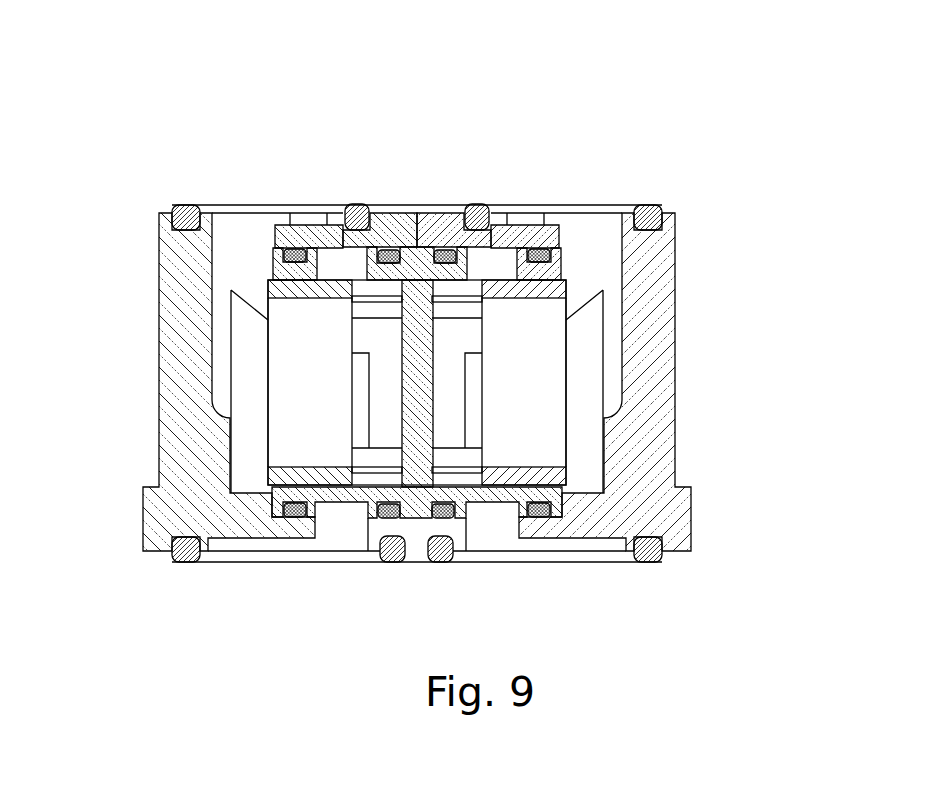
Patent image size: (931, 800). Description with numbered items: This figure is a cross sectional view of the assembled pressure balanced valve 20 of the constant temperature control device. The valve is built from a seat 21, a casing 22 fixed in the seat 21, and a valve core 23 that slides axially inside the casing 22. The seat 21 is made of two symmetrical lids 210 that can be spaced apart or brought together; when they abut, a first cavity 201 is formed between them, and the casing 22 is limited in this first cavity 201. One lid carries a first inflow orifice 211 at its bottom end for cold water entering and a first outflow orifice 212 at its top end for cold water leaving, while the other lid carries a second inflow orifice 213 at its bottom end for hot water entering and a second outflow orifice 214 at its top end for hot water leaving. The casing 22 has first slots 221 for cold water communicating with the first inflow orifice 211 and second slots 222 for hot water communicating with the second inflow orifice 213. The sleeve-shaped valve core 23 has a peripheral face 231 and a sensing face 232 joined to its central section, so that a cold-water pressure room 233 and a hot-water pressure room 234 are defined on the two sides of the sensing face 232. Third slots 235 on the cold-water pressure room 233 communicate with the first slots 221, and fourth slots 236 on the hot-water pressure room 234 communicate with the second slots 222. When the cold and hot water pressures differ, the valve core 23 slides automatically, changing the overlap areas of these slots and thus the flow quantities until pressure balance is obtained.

The pressure balanced valve 20 is at (658, 178).
The seat 21 is at (375, 73).
The lids 210 is at (402, 212).
The casing 22 is at (417, 246).
The valve core 23 is at (570, 405).
The first cavity 201 is at (247, 372).
The first inflow orifice 211 is at (345, 527).
The first outflow orifice 212 is at (250, 228).
The second inflow orifice 213 is at (490, 528).
The second outflow orifice 214 is at (590, 243).
The first slots 221 is at (335, 262).
The second slots 222 is at (498, 262).
The peripheral face 231 is at (292, 517).
The sensing face 232 is at (415, 470).
The cold-water pressure room 233 is at (297, 433).
The hot-water pressure room 234 is at (530, 382).
The third slots 235 is at (367, 335).
The fourth slots 236 is at (467, 333).